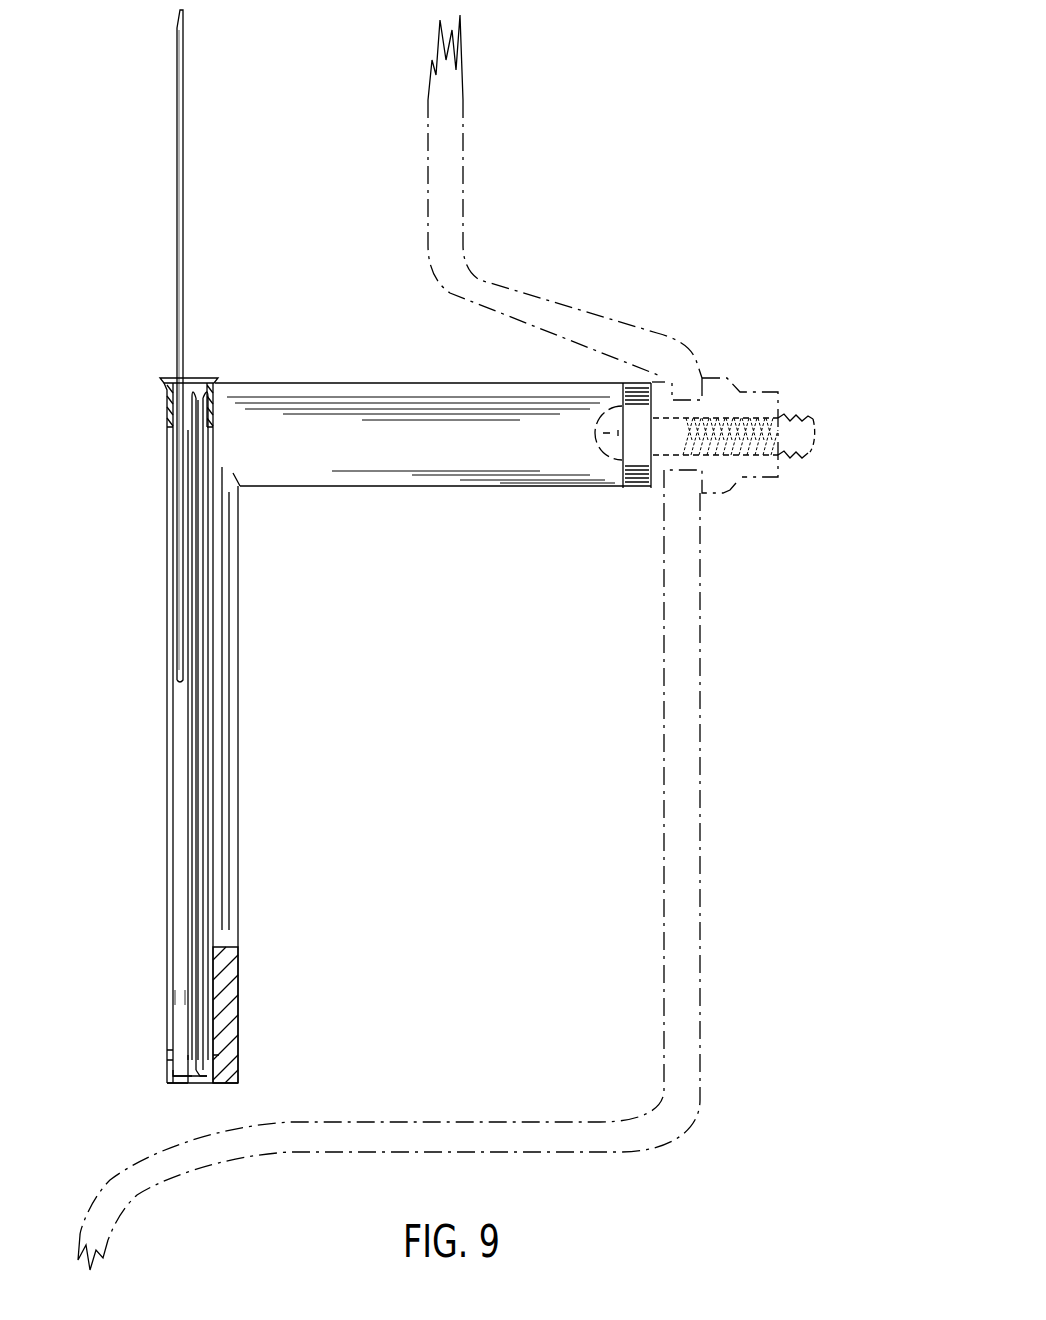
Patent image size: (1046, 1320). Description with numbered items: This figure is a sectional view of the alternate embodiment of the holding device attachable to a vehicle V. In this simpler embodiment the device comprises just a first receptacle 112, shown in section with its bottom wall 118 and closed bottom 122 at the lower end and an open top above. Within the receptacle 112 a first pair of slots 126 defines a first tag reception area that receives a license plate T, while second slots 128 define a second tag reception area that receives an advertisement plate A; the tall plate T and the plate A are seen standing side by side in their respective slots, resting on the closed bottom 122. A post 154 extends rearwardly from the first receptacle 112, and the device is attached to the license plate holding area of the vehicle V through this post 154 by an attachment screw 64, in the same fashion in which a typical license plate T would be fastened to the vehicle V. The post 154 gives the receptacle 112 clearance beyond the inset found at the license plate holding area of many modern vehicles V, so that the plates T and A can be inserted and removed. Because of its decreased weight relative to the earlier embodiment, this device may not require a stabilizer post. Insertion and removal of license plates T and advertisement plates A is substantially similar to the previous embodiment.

The first receptacle 112 is at (240, 852).
The license plate T is at (183, 125).
The advertisement plate A is at (202, 377).
The first pair of slots 126 is at (180, 1002).
The bottom wall 118 is at (170, 1063).
The closed bottom 122 is at (183, 1083).
The second slots 128 is at (207, 1083).
The post 154 is at (375, 388).
The vehicle V is at (538, 295).
The attachment screws 64 is at (818, 408).